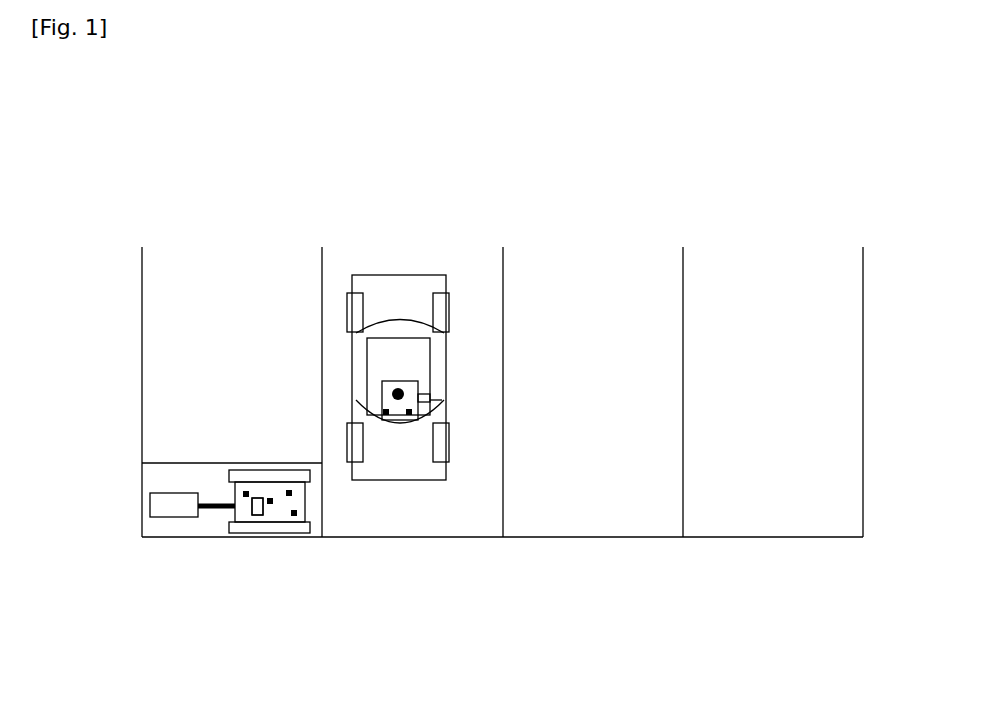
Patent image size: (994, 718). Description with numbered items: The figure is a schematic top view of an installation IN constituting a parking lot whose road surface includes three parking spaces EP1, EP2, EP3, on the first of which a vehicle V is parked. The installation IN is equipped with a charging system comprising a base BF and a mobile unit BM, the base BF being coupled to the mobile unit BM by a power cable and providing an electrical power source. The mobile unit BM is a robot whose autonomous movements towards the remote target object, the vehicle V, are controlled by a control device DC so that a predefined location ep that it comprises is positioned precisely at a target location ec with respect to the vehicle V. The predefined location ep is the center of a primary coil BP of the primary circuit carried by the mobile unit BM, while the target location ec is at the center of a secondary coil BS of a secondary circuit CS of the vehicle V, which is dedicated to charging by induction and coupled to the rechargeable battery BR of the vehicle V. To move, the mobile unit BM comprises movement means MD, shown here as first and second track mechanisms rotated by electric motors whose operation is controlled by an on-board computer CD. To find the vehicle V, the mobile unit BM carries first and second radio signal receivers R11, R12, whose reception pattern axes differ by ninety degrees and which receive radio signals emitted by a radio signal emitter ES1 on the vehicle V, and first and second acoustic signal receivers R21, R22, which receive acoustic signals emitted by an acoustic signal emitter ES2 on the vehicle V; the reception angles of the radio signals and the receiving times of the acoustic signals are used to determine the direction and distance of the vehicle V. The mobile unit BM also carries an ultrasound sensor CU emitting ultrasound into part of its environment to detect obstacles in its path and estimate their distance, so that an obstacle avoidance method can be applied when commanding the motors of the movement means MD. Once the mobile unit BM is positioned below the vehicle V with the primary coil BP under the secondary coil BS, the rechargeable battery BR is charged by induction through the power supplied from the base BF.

The installation IN is at (124, 279).
The vehicle V is at (363, 275).
The rechargeable battery BR is at (399, 338).
The parking space EP1 is at (470, 298).
The parking space EP2 is at (615, 281).
The parking space EP3 is at (802, 281).
The secondary coil BS is at (397, 388).
The secondary circuit CS is at (382, 390).
The target location ec is at (410, 391).
The radio signal emitter ES1 is at (412, 416).
The acoustic signal emitter ES2 is at (388, 418).
The predefined location ep is at (258, 487).
The ultrasound sensor CU is at (240, 494).
The base BF is at (152, 505).
The mobile unit BM is at (233, 514).
The movement means MD is at (228, 533).
The second radio signal receiver R12 is at (288, 492).
The first radio signal receiver R11 is at (296, 512).
The on-board computer CD is at (258, 515).
The control device DC is at (257, 506).
The primary coil BP is at (271, 506).
The first acoustic signal receiver R21 is at (270, 501).
The second acoustic signal receiver R22 is at (270, 501).